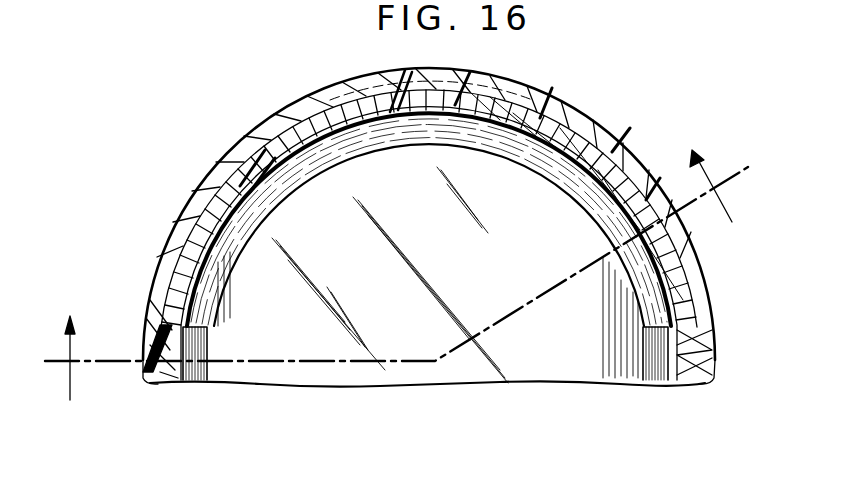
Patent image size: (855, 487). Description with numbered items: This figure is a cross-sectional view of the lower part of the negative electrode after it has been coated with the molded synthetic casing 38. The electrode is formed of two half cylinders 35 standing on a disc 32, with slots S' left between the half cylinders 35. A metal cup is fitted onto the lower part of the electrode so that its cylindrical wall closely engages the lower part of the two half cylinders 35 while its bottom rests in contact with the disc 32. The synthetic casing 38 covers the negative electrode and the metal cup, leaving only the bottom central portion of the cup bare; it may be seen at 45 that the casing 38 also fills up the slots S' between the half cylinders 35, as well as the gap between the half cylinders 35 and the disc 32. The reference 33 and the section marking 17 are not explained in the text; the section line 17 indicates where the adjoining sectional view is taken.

The section line 17- 17 is at (396, 249).
The disc 32 is at (470, 274).
The base flange 33 is at (645, 360).
The half cylinders 35 is at (232, 176).
The synthetic casing 38 is at (697, 283).
The casing-filled slot region 45 is at (398, 78).
The slots S' is at (525, 104).